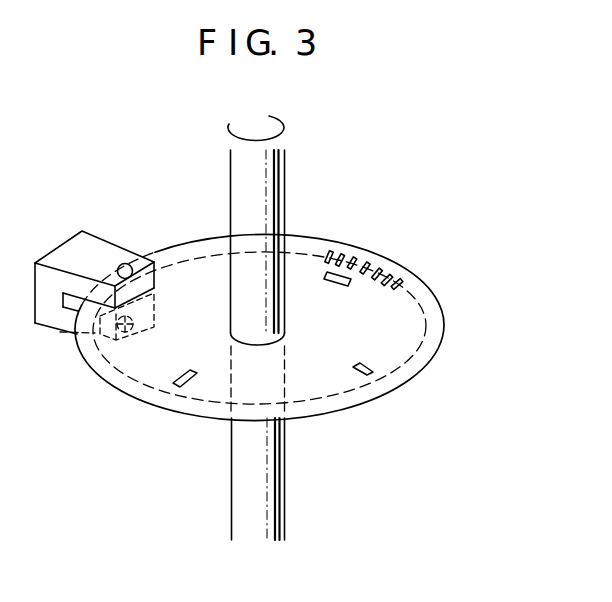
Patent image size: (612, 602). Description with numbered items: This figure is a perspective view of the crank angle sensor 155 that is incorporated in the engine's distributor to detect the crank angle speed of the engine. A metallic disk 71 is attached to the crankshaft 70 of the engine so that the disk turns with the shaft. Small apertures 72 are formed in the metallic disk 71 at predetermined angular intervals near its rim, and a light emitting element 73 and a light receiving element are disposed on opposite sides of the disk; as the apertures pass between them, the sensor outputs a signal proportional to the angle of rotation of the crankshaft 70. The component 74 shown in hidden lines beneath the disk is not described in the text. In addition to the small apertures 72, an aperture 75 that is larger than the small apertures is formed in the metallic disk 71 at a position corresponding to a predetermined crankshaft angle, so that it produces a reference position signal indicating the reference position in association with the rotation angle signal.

The crank angle sensor 155 is at (446, 171).
The crankshaft 70 is at (272, 202).
The metallic disk 71 is at (402, 348).
The small apertures 72 is at (378, 262).
The light emitting element 73 is at (133, 275).
The photodetector 74 is at (147, 324).
The aperture 75 is at (338, 287).